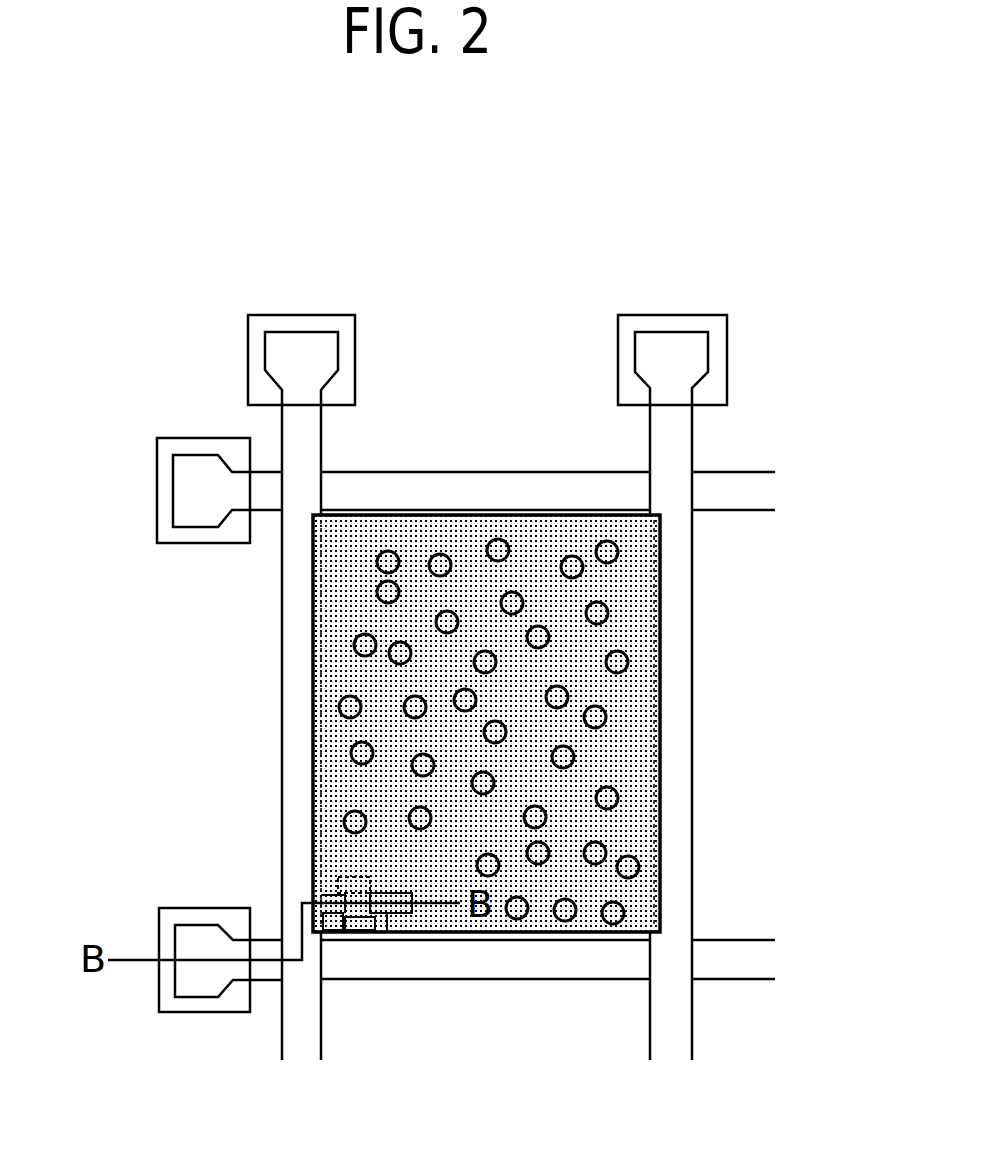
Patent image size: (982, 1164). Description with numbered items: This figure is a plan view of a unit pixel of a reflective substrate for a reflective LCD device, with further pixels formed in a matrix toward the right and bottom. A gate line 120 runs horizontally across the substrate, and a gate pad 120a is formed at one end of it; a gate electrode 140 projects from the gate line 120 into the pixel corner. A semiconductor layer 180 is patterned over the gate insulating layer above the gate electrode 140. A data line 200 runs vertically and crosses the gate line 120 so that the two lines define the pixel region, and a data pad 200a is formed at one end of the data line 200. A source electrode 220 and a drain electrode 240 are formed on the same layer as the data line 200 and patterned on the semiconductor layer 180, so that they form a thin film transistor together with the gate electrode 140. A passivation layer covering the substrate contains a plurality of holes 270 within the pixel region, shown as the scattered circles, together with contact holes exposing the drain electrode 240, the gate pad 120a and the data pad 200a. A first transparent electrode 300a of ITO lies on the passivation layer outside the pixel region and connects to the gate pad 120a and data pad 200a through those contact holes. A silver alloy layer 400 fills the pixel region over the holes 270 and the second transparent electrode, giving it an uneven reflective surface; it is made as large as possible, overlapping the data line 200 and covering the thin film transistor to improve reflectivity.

The gate line 120 is at (437, 490).
The gate pad 120a is at (185, 498).
The gate electrode 140 is at (357, 940).
The semiconductor layer 180 is at (362, 880).
The data line 200 is at (678, 836).
The data pad 200a is at (302, 340).
The source electrode 220 is at (316, 897).
The drain electrode 240 is at (413, 900).
The holes 270 is at (617, 662).
The first transparent electrode 300a is at (248, 327).
The silver alloy layer 400 is at (623, 767).